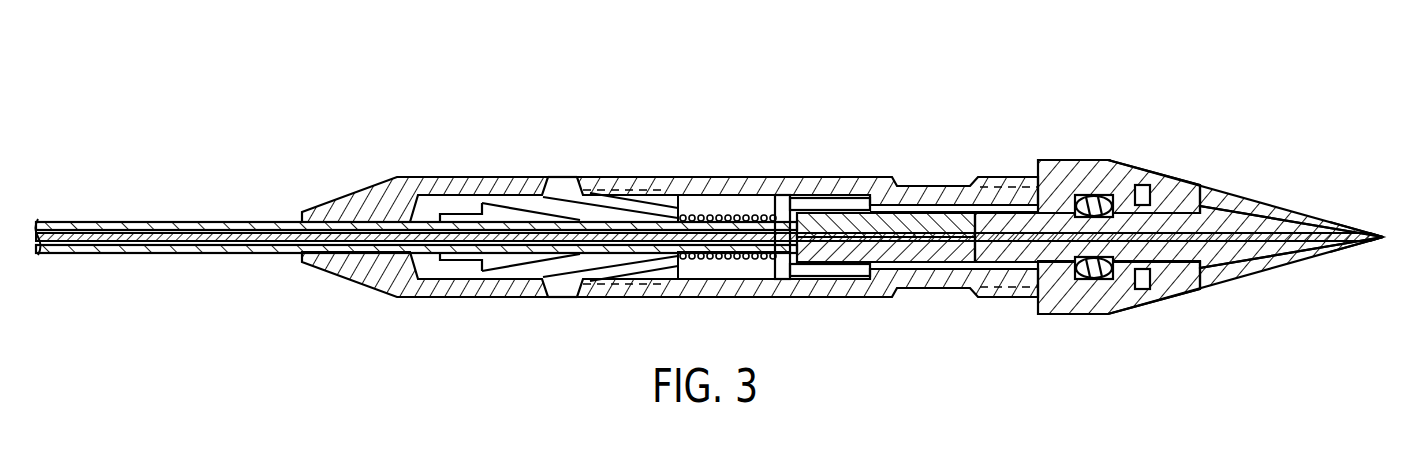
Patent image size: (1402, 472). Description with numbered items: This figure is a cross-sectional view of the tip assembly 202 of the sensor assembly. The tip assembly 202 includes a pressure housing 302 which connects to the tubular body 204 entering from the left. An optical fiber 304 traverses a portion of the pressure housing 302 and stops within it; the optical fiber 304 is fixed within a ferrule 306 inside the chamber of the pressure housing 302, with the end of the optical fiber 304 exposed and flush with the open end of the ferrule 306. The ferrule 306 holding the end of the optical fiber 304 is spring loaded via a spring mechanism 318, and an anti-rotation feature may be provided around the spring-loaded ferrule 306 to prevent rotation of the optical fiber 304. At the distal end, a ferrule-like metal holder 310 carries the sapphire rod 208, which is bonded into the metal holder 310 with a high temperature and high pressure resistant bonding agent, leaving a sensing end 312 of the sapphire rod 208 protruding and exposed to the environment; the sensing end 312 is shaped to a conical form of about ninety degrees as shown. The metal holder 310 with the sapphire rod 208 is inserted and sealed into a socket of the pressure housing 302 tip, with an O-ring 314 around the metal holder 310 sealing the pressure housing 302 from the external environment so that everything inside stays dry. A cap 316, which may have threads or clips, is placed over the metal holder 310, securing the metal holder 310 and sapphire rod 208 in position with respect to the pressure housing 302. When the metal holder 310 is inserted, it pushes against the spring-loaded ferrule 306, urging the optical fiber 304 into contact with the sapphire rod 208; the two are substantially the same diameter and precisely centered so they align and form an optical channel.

The tip assembly 202 is at (1166, 63).
The tubular body 204 is at (115, 226).
The sapphire rod 208 is at (1240, 246).
The pressure housing 302 is at (710, 177).
The optical fiber 304 is at (192, 243).
The ferrule 306 is at (890, 216).
The metal holder 310 is at (1258, 208).
The sensing end 312 is at (1383, 237).
The O-ring 314 is at (1092, 200).
The cap 316 is at (1082, 308).
The spring mechanism 318 is at (725, 259).